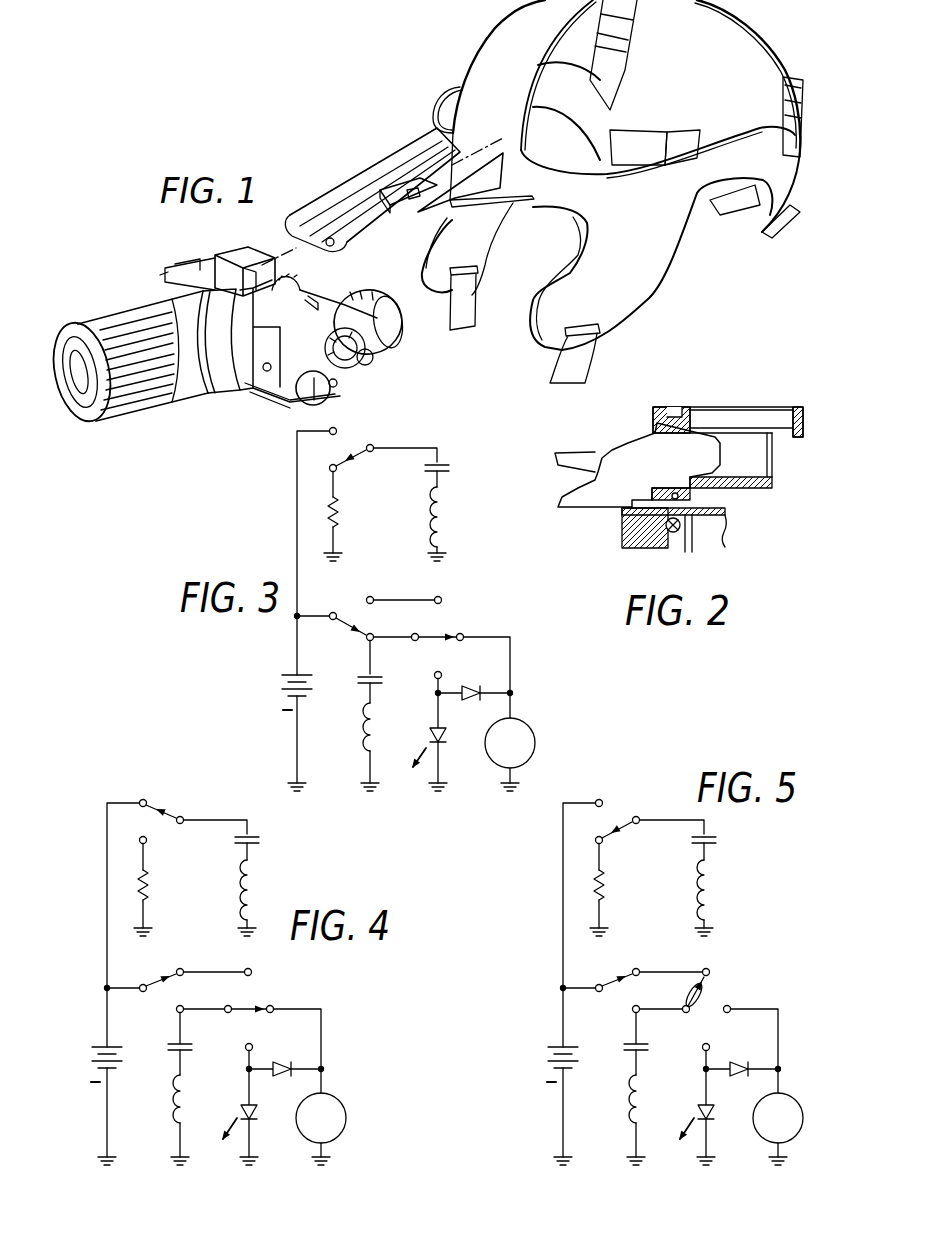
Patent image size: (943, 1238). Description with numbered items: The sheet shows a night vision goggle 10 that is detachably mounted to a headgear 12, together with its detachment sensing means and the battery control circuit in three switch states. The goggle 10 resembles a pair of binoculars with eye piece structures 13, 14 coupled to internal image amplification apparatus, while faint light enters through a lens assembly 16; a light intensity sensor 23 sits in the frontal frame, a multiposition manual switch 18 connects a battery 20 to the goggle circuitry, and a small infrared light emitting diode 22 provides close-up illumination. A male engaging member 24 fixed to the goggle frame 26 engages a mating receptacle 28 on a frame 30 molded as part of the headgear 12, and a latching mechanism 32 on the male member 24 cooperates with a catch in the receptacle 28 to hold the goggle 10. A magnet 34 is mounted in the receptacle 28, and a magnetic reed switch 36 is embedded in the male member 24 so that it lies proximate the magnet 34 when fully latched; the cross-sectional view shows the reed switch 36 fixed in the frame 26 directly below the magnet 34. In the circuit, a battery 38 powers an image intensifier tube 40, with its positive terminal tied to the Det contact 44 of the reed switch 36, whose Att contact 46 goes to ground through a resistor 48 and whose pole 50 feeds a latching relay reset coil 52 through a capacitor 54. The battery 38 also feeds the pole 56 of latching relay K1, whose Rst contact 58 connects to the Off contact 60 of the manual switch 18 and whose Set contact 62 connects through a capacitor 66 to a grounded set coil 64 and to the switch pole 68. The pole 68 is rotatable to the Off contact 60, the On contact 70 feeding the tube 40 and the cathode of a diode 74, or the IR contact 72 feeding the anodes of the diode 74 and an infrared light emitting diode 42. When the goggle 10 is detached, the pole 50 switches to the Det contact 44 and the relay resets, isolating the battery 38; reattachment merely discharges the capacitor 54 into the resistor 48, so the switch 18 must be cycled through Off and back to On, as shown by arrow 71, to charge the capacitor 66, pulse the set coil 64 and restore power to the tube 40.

In FIG. 1, the night vision goggle 10 is at (128, 265).
In FIG. 1, the headgear 12 is at (452, 66).
In FIG. 1, the eye piece structure 13 is at (403, 335).
In FIG. 1, the eye piece structure 14 is at (310, 283).
In FIG. 1, the lens assembly 16 is at (145, 300).
In FIG. 1, the manual switch 18 is at (372, 362).
In FIG. 3, the manual switch 18 is at (476, 616).
In FIG. 4, the manual switch 18 is at (285, 982).
In FIG. 5, the manual switch 18 is at (745, 983).
In FIG. 1, the battery 20 is at (272, 393).
In FIG. 1, the infrared light emitting diode 22 is at (300, 398).
In FIG. 1, the light intensity sensor 23 is at (250, 385).
In FIG. 1, the male engaging member 24 is at (240, 255).
In FIG. 2, the male engaging member 24 is at (690, 469).
In FIG. 1, the goggle frame 26 is at (285, 317).
In FIG. 2, the goggle frame 26 is at (666, 548).
In FIG. 1, the receptacle 28 is at (387, 195).
In FIG. 2, the receptacle 28 is at (748, 482).
In FIG. 1, the frame 30 is at (330, 205).
In FIG. 1, the latching mechanism 32 is at (183, 270).
In FIG. 1, the magnet 34 is at (410, 187).
In FIG. 2, the magnet 34 is at (668, 495).
In FIG. 1, the magnetic reed switch 36 is at (258, 252).
In FIG. 2, the magnetic reed switch 36 is at (668, 527).
In FIG. 3, the magnetic reed switch 36 is at (379, 442).
In FIG. 4, the magnetic reed switch 36 is at (190, 805).
In FIG. 5, the magnetic reed switch 36 is at (633, 810).
In FIG. 3, the battery 38 is at (282, 690).
In FIG. 4, the battery 38 is at (92, 1058).
In FIG. 5, the battery 38 is at (548, 1058).
In FIG. 3, the image intensifier tube 40 is at (528, 722).
In FIG. 4, the image intensifier tube 40 is at (334, 1095).
In FIG. 5, the image intensifier tube 40 is at (790, 1095).
In FIG. 3, the infrared light emitting diode 42 is at (430, 730).
In FIG. 4, the infrared light emitting diode 42 is at (245, 1102).
In FIG. 5, the infrared light emitting diode 42 is at (701, 1102).
In FIG. 3, the Det contact 44 is at (329, 436).
In FIG. 4, the Det contact 44 is at (139, 808).
In FIG. 5, the Det contact 44 is at (598, 808).
In FIG. 3, the Att contact 46 is at (330, 470).
In FIG. 4, the Att contact 46 is at (140, 842).
In FIG. 5, the Att contact 46 is at (596, 842).
In FIG. 3, the resistor 48 is at (339, 514).
In FIG. 4, the resistor 48 is at (150, 900).
In FIG. 5, the resistor 48 is at (607, 902).
In FIG. 3, the pole 50 is at (373, 452).
In FIG. 4, the pole 50 is at (183, 826).
In FIG. 5, the pole 50 is at (640, 828).
In FIG. 3, the latching relay reset coil 52 is at (430, 512).
In FIG. 4, the latching relay reset coil 52 is at (242, 893).
In FIG. 5, the latching relay reset coil 52 is at (700, 893).
In FIG. 3, the capacitor 54 is at (446, 462).
In FIG. 4, the capacitor 54 is at (262, 834).
In FIG. 5, the capacitor 54 is at (718, 832).
In FIG. 3, the pole 56 is at (330, 613).
In FIG. 4, the pole 56 is at (141, 985).
In FIG. 5, the pole 56 is at (598, 985).
In FIG. 3, the Rst contact 58 is at (366, 597).
In FIG. 4, the Rst contact 58 is at (177, 970).
In FIG. 5, the Rst contact 58 is at (633, 972).
In FIG. 3, the Off contact 60 is at (435, 597).
In FIG. 4, the Off contact 60 is at (250, 971).
In FIG. 5, the Off contact 60 is at (705, 969).
In FIG. 3, the Set contact 62 is at (366, 641).
In FIG. 4, the Set contact 62 is at (176, 1013).
In FIG. 5, the Set contact 62 is at (633, 1013).
In FIG. 3, the latching relay set coil 64 is at (362, 731).
In FIG. 4, the latching relay set coil 64 is at (173, 1090).
In FIG. 5, the latching relay set coil 64 is at (628, 1090).
In FIG. 3, the capacitor 66 is at (357, 686).
In FIG. 4, the capacitor 66 is at (168, 1047).
In FIG. 5, the capacitor 66 is at (623, 1047).
In FIG. 3, the pole 68 is at (416, 633).
In FIG. 4, the pole 68 is at (238, 995).
In FIG. 5, the pole 68 is at (684, 1013).
In FIG. 3, the On contact 70 is at (464, 641).
In FIG. 4, the On contact 70 is at (274, 1013).
In FIG. 5, the On contact 70 is at (731, 1013).
In FIG. 5, the arrow 71 is at (693, 1008).
In FIG. 3, the IR contact 72 is at (434, 675).
In FIG. 4, the IR contact 72 is at (245, 1047).
In FIG. 5, the IR contact 72 is at (702, 1047).
In FIG. 3, the diode 74 is at (477, 703).
In FIG. 4, the diode 74 is at (289, 1077).
In FIG. 5, the diode 74 is at (746, 1077).